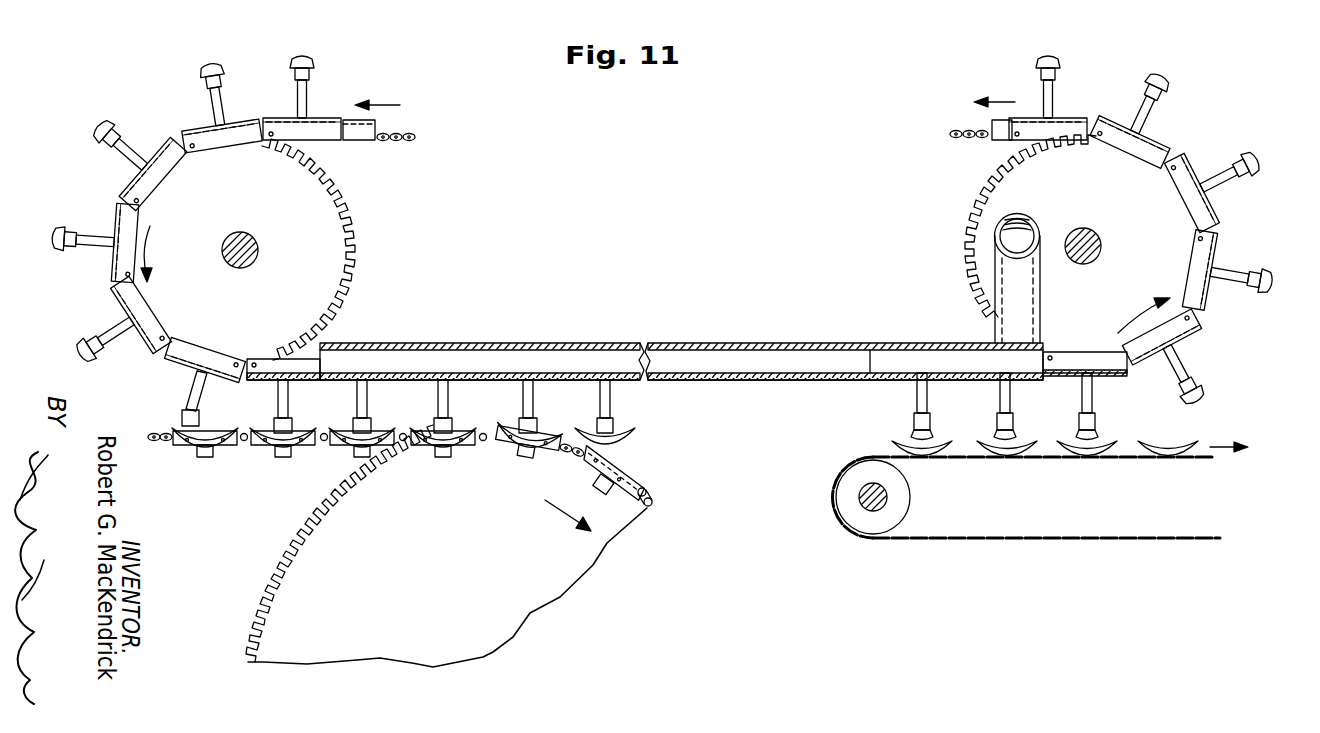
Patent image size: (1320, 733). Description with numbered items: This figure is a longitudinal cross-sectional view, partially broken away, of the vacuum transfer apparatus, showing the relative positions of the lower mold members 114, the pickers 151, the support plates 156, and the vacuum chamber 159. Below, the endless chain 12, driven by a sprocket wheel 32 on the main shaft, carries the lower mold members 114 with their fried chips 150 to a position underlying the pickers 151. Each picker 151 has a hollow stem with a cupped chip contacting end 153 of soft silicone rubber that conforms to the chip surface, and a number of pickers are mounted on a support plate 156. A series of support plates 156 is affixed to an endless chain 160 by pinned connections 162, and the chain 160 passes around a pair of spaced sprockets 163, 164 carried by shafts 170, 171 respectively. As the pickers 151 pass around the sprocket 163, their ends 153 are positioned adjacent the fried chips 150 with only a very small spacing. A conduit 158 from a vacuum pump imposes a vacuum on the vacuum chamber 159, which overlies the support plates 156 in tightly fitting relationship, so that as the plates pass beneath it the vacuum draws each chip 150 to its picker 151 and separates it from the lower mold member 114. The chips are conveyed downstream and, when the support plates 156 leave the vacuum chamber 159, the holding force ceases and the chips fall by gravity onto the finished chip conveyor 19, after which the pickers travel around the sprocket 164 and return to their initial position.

The sprocket 163 is at (256, 192).
The shaft 170 is at (253, 242).
The pinned connection 162 is at (240, 358).
The sprocket 164 is at (1101, 192).
The shaft 171 is at (1093, 242).
The conduit 158 is at (1026, 305).
The endless chain 160 is at (957, 131).
The vacuum chamber 159 is at (526, 344).
The support plate 156 is at (430, 377).
The chip contacting end 153 is at (526, 427).
The fried chip 150 is at (541, 430).
The picker 151 is at (613, 405).
The lower mold member 114 is at (606, 458).
The endless chain 12 is at (651, 498).
The sprocket wheel 32 is at (471, 524).
The conveyor 19 is at (1126, 458).